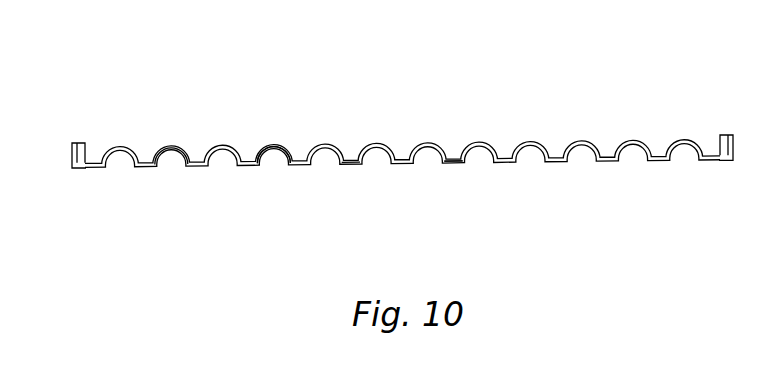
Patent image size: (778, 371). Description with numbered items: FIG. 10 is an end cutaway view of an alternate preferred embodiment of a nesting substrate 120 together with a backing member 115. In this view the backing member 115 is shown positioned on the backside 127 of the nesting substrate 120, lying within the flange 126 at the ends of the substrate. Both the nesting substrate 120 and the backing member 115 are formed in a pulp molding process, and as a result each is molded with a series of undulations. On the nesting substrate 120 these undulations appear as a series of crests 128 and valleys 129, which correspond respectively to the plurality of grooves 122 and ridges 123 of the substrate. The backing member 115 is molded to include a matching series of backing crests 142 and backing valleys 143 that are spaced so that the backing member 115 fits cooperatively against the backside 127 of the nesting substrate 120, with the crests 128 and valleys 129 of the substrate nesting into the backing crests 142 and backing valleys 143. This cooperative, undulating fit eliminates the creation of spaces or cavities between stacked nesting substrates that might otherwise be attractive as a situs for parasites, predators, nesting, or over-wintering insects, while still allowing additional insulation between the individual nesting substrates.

The backing member 115 is at (632, 52).
The nesting substrate 120 is at (101, 201).
The grooves 122 is at (273, 161).
The ridges 123 is at (455, 165).
The flange 126 is at (730, 134).
The backside 127 is at (92, 156).
The crests 128 is at (275, 147).
The valleys 129 is at (455, 157).
The backing crests 142 is at (172, 146).
The backing valleys 143 is at (357, 158).